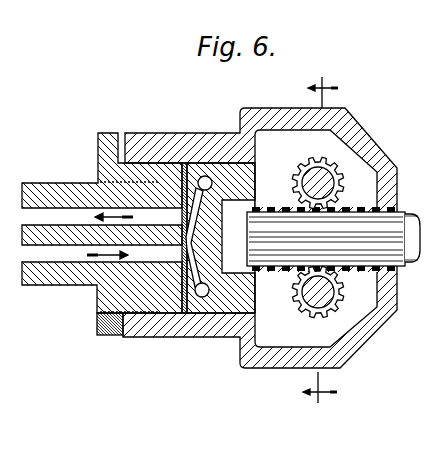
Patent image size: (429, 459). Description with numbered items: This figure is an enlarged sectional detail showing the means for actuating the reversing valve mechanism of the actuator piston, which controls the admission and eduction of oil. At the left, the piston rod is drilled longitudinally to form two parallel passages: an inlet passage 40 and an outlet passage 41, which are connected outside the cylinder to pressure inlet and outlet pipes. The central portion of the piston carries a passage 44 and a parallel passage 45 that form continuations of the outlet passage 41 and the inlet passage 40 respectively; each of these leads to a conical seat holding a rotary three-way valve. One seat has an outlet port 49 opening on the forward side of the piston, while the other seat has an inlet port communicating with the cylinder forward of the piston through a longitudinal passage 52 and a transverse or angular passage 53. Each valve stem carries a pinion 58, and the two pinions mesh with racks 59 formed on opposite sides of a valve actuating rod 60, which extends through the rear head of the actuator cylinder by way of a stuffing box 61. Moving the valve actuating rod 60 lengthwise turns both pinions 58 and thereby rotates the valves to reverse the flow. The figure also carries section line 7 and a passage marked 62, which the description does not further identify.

The section line 7- 7 is at (320, 242).
The inlet passage 40 is at (77, 253).
The outlet passage 41 is at (53, 213).
The passage 44 is at (276, 238).
The parallel passage 45 is at (341, 309).
The outlet port 49 is at (342, 160).
The longitudinal passage 52 is at (417, 253).
The transverse passage 53 is at (417, 226).
The pinion 58 is at (304, 162).
The rack 59 is at (353, 208).
The valve actuating rod 60 is at (290, 270).
The stuffing box 61 is at (64, 256).
The upper fluid passage 62 is at (66, 204).